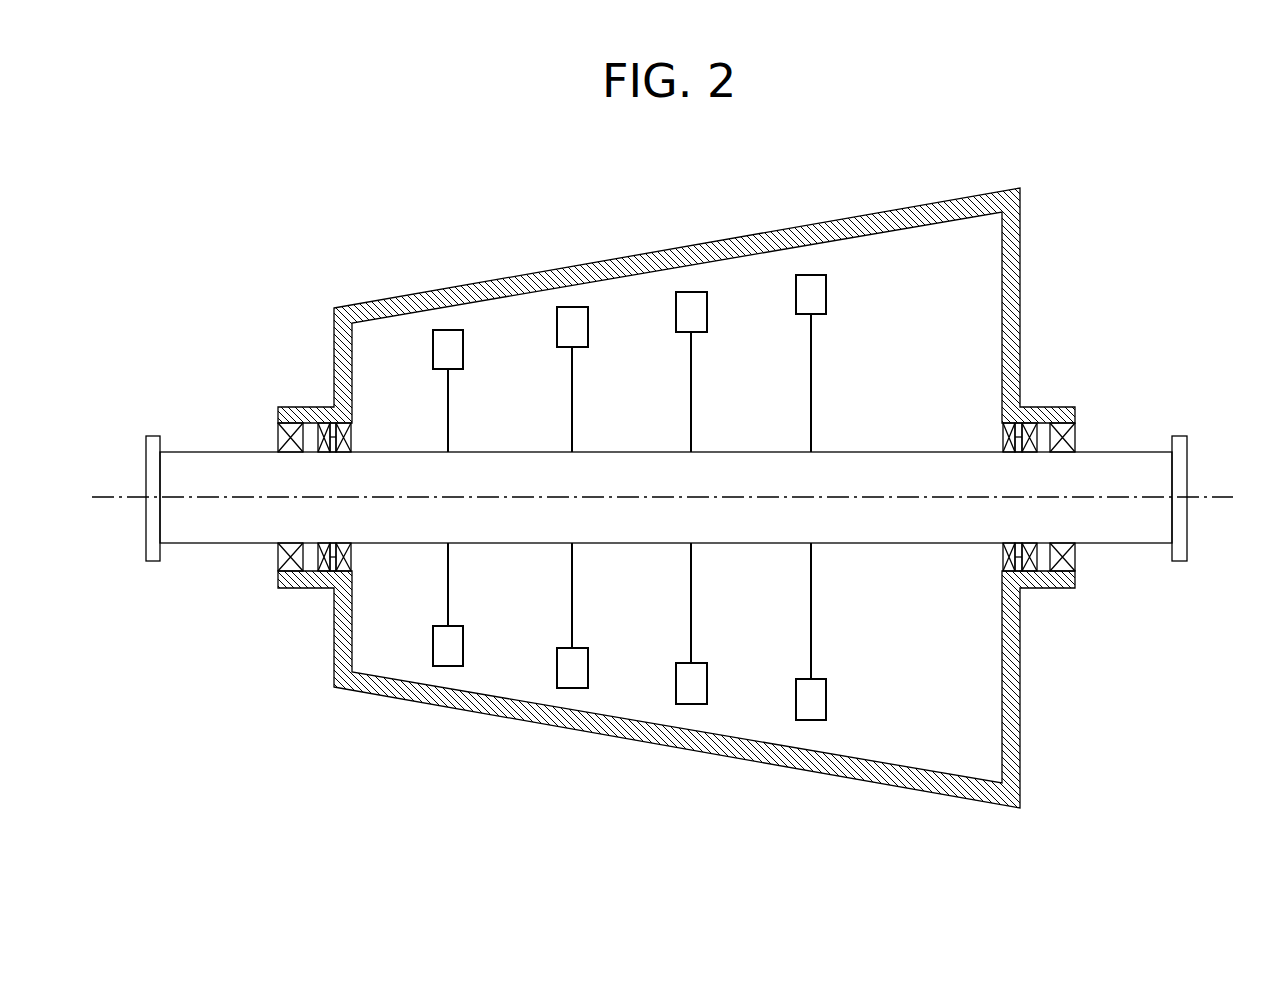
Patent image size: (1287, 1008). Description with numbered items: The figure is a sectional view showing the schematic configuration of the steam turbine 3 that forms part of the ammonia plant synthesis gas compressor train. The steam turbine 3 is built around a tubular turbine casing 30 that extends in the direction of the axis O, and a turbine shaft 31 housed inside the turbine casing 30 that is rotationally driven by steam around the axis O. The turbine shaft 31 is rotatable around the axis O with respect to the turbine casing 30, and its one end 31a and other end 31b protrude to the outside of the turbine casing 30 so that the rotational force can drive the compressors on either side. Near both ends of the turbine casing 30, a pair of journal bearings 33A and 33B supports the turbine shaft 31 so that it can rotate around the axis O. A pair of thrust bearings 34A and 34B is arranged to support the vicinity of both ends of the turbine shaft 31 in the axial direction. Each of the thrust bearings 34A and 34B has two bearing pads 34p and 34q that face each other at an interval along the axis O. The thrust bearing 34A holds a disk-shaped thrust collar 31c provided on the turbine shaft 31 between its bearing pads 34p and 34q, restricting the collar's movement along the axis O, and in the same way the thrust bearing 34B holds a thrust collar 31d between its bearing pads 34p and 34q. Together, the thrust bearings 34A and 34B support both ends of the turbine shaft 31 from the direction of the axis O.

The steam turbine 3 is at (512, 254).
The turbine casing 30 is at (638, 255).
The turbine shaft 31 is at (893, 452).
The one end 31a is at (172, 452).
The other end 31b is at (1164, 548).
The thrust collar 31c is at (328, 590).
The thrust collar 31d is at (1025, 590).
The journal bearing 33A is at (278, 436).
The journal bearing 33B is at (1078, 436).
The thrust bearing 34A is at (352, 436).
The thrust bearing 34B is at (1003, 433).
The bearing pad 34p is at (305, 590).
The bearing pad 34q is at (351, 564).
The axis O is at (1218, 497).